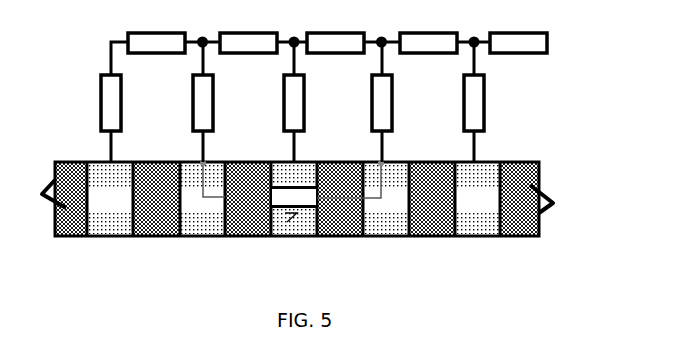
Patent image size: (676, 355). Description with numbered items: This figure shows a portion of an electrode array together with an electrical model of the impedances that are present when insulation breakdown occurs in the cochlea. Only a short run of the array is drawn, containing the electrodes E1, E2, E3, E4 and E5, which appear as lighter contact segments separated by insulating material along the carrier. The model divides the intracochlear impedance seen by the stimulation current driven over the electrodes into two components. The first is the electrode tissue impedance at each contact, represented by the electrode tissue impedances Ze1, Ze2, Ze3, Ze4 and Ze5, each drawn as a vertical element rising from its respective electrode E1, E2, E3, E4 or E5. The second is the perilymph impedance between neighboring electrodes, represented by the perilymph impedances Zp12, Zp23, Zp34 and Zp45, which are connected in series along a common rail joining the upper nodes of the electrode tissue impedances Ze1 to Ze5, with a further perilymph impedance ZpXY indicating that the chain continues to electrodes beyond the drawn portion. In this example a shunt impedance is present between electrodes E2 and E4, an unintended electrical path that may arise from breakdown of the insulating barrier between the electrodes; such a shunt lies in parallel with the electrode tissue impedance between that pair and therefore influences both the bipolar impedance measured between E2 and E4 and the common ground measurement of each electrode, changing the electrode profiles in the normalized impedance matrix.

The electrode E1 is at (118, 225).
The electrode E2 is at (202, 225).
The electrode E3 is at (285, 225).
The electrode E4 is at (380, 225).
The electrode E5 is at (475, 225).
The electrode tissue impedance Ze1 is at (95, 102).
The electrode tissue impedance Ze2 is at (182, 100).
The electrode tissue impedance Ze3 is at (275, 100).
The electrode tissue impedance Ze4 is at (362, 100).
The electrode tissue impedance Ze5 is at (454, 100).
The perilymph impedance Zp12 is at (174, 26).
The perilymph impedance Zp23 is at (263, 26).
The perilymph impedance Zp34 is at (353, 26).
The perilymph impedance Zp45 is at (445, 26).
The perilymph impedance ZpXY is at (518, 26).